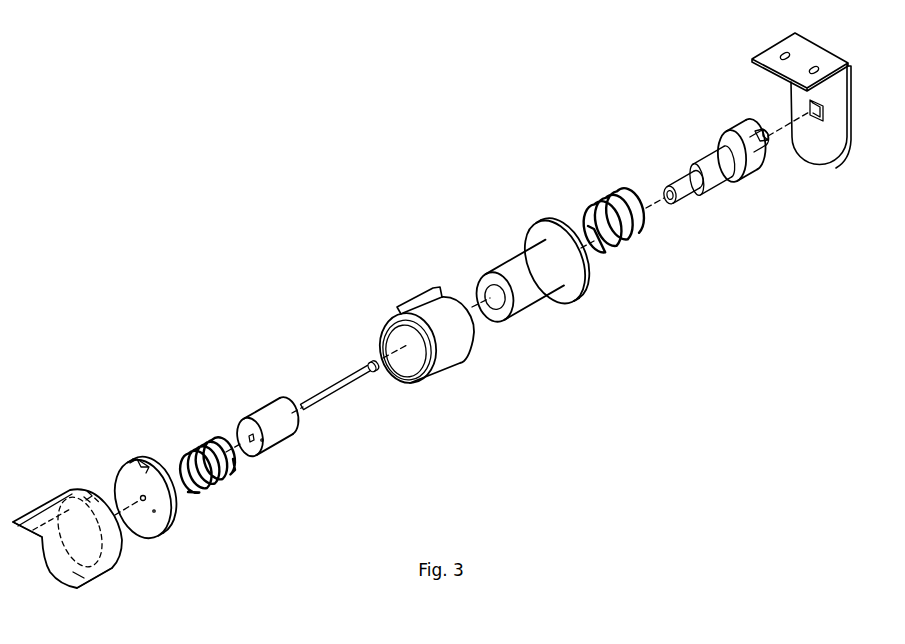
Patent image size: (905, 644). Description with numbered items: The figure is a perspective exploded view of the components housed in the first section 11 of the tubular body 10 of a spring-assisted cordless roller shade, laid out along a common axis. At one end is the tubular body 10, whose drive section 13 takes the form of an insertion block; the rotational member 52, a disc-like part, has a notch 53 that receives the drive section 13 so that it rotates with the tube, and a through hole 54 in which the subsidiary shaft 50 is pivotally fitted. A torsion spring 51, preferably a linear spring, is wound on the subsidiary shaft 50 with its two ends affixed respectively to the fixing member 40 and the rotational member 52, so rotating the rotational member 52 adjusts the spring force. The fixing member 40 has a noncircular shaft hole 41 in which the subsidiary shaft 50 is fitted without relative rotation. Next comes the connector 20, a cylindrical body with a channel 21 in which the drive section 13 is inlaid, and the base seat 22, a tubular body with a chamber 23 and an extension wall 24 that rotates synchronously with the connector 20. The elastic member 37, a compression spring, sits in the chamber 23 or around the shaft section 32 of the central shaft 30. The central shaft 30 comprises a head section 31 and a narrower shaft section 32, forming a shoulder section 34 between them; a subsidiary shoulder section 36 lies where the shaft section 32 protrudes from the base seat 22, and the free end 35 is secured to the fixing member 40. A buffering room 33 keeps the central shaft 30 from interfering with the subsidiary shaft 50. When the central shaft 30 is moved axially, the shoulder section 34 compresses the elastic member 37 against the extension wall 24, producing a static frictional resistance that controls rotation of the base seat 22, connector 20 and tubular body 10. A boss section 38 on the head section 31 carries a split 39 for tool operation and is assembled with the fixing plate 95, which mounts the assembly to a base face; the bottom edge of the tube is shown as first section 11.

The tubular body 10 is at (45, 500).
The first section 11 is at (92, 585).
The drive section 13 is at (84, 505).
The connector 20 is at (394, 297).
The channel 21 is at (424, 307).
The base seat 22 is at (547, 221).
The chamber 23 is at (496, 303).
The extension wall 24 is at (481, 279).
The central shaft 30 is at (722, 164).
The head section 31 is at (752, 164).
The shaft section 32 is at (707, 162).
The buffering room 33 is at (670, 203).
The shoulder section 34 is at (735, 181).
The free end 35 is at (673, 180).
The subsidiary shoulder section 36 is at (700, 194).
The elastic member 37 is at (615, 200).
The boss section 38 is at (768, 145).
The split 39 is at (726, 129).
The fixing member 40 is at (263, 412).
The shaft hole 41 is at (253, 447).
The subsidiary shaft 50 is at (348, 392).
The torsion spring 51 is at (200, 443).
The rotational member 52 is at (160, 537).
The notch 53 is at (147, 470).
The through hole 54 is at (143, 503).
The fixing plate 95 is at (826, 161).